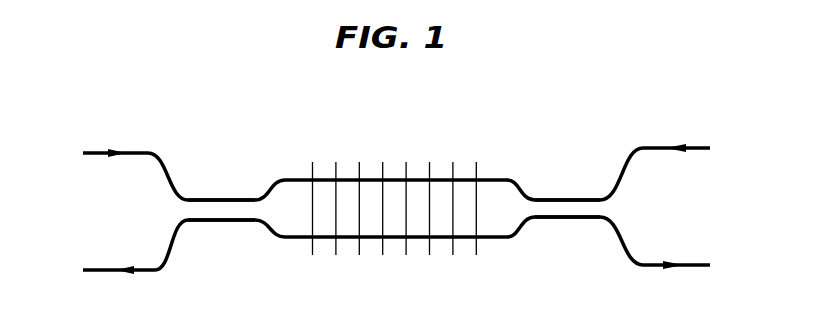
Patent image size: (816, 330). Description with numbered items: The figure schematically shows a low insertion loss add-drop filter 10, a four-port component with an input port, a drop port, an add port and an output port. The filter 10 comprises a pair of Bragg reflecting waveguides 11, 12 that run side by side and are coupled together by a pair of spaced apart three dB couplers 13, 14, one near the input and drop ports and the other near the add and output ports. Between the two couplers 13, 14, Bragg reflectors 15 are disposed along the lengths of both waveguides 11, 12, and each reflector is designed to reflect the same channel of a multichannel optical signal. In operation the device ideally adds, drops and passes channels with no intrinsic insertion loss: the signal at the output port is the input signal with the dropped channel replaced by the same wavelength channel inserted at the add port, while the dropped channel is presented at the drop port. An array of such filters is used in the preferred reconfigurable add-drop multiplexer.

The add-drop filter 10 is at (521, 106).
The Bragg reflecting waveguide 11 is at (290, 180).
The Bragg reflecting waveguide 12 is at (285, 240).
The 3 dB coupler 13 is at (213, 200).
The 3 dB coupler 14 is at (565, 198).
The Bragg reflectors 15 is at (488, 262).